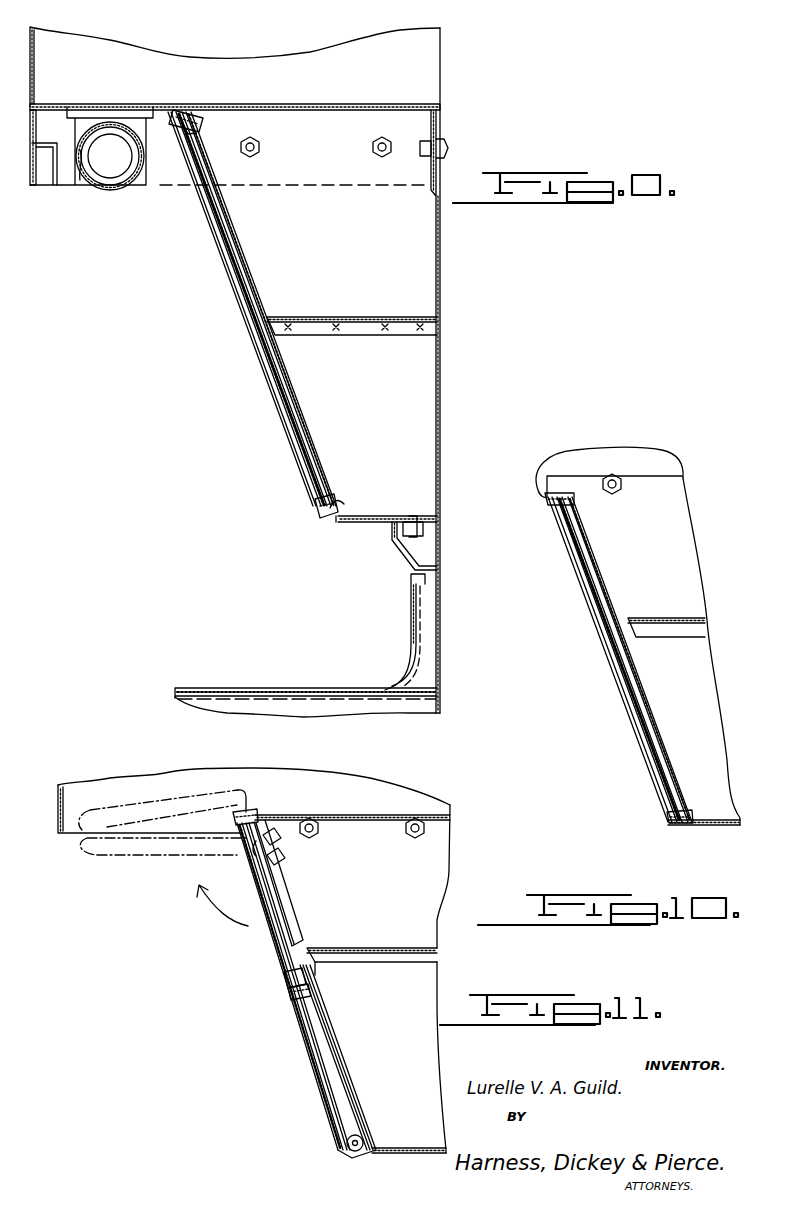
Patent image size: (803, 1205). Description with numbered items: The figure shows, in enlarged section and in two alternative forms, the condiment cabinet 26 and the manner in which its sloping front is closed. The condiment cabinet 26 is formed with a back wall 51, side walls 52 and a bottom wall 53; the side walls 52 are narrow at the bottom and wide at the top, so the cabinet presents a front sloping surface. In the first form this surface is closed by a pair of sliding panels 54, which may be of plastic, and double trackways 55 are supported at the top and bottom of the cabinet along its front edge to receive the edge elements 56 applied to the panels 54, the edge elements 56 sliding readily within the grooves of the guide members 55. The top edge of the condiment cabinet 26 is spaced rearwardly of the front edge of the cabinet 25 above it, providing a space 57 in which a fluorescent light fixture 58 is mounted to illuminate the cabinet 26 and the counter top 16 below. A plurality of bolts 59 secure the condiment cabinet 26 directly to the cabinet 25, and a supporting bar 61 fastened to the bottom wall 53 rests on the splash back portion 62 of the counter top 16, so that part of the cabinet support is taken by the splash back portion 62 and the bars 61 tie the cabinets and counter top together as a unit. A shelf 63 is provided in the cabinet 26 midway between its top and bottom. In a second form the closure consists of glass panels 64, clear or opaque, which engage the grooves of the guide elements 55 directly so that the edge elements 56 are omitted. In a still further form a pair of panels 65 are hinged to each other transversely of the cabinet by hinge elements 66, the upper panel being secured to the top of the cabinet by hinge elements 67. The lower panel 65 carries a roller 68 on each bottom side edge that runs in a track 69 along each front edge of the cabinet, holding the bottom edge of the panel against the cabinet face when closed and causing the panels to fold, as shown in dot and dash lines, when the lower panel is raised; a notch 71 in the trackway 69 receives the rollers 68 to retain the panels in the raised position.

In FIG. 9, the counter top 16 is at (286, 668).
In FIG. 9, the cabinet 25 is at (447, 80).
In FIG. 9, the condiment cabinet 26 is at (441, 277).
In FIG. 10, the condiment cabinet 26 is at (708, 667).
In FIG. 11, the condiment cabinet 26 is at (426, 1057).
In FIG. 9, the back wall 51 is at (441, 302).
In FIG. 9, the side walls 52 is at (441, 236).
In FIG. 9, the bottom wall 53 is at (395, 516).
In FIG. 9, the sliding panels 54 is at (282, 402).
In FIG. 9, the double trackways 55 is at (176, 110).
In FIG. 10, the double trackways 55 is at (546, 501).
In FIG. 9, the edge elements 56 is at (186, 138).
In FIG. 9, the space 57 is at (150, 180).
In FIG. 9, the fluorescent light fixture 58 is at (95, 180).
In FIG. 9, the bolts 59 is at (450, 149).
In FIG. 9, the supporting bar 61 is at (428, 546).
In FIG. 9, the splash back portion 62 is at (430, 607).
In FIG. 9, the shelf 63 is at (338, 316).
In FIG. 10, the shelf 63 is at (650, 618).
In FIG. 11, the shelf 63 is at (412, 946).
In FIG. 10, the glass panels 64 is at (628, 726).
In FIG. 11, the panels 65 is at (270, 957).
In FIG. 11, the hinge elements 66 is at (288, 978).
In FIG. 11, the hinge elements 67 is at (258, 812).
In FIG. 11, the roller 68 is at (352, 1154).
In FIG. 11, the track 69 is at (292, 994).
In FIG. 11, the notch 71 is at (284, 847).